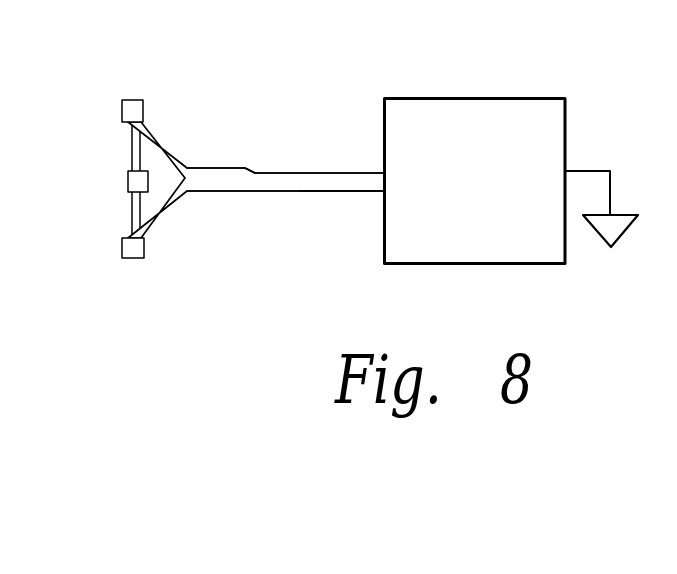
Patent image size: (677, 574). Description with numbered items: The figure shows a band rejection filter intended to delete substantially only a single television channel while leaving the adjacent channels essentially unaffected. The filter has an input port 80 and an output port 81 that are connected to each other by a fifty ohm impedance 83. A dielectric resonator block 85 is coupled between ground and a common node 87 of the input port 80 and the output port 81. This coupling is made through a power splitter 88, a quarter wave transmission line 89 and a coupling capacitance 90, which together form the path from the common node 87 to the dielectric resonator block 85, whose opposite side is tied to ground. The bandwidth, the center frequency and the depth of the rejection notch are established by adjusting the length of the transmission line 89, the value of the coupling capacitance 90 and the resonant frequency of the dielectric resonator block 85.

The input port 80 is at (138, 100).
The output port 81 is at (138, 258).
The 50 ohm impedance 83 is at (128, 181).
The dielectric resonator block 85 is at (467, 98).
The common node 87 is at (200, 137).
The power splitter 88 is at (235, 193).
The 1/4 wave transmission line 89 is at (352, 172).
The coupling capacitance 90 is at (358, 224).